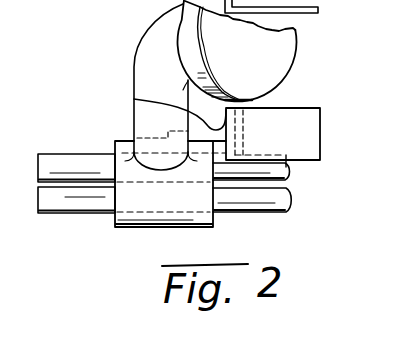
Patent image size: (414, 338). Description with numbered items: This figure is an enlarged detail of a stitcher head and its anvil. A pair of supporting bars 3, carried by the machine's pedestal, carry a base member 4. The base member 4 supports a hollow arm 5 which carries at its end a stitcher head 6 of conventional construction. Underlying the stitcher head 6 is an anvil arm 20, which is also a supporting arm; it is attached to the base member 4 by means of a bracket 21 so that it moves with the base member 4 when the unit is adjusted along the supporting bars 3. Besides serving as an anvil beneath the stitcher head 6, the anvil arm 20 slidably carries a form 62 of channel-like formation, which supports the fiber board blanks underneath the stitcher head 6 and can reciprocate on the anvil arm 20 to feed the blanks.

The supporting bars 3 is at (52, 162).
The base member 4 is at (142, 214).
The hollow arm 5 is at (160, 40).
The stitcher head 6 is at (280, 63).
The anvil arm 20 is at (244, 128).
The bracket 21 is at (134, 99).
The form 62 is at (303, 138).